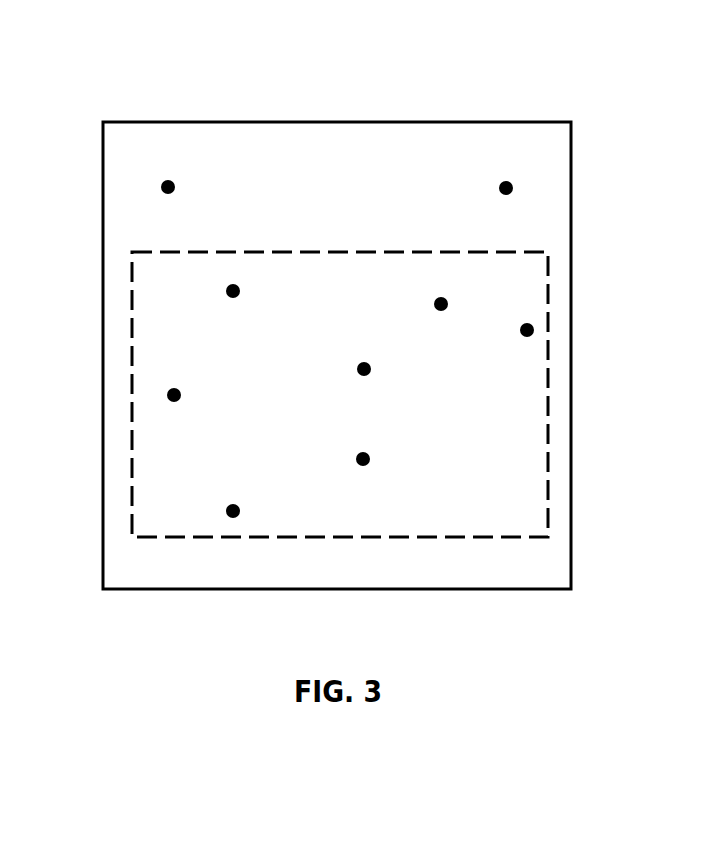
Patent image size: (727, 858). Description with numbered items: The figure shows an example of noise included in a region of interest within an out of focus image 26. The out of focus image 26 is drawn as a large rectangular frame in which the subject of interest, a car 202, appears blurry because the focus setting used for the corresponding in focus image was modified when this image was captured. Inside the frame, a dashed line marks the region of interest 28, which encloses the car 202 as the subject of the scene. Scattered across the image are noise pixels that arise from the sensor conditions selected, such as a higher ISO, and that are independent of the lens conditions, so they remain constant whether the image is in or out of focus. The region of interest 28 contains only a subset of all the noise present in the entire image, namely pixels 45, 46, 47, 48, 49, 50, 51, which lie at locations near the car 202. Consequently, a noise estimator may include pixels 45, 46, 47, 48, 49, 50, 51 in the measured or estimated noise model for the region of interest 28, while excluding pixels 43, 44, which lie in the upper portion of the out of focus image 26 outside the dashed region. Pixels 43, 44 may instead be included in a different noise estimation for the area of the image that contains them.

The out of focus image 26 is at (249, 88).
The region of interest 28 is at (548, 470).
The car 202 is at (522, 396).
The pixel 43 is at (162, 187).
The pixel 44 is at (512, 188).
The pixel 45 is at (447, 304).
The pixel 46 is at (534, 330).
The pixel 47 is at (357, 459).
The pixel 48 is at (227, 511).
The pixel 49 is at (168, 395).
The pixel 50 is at (358, 369).
The pixel 51 is at (227, 291).